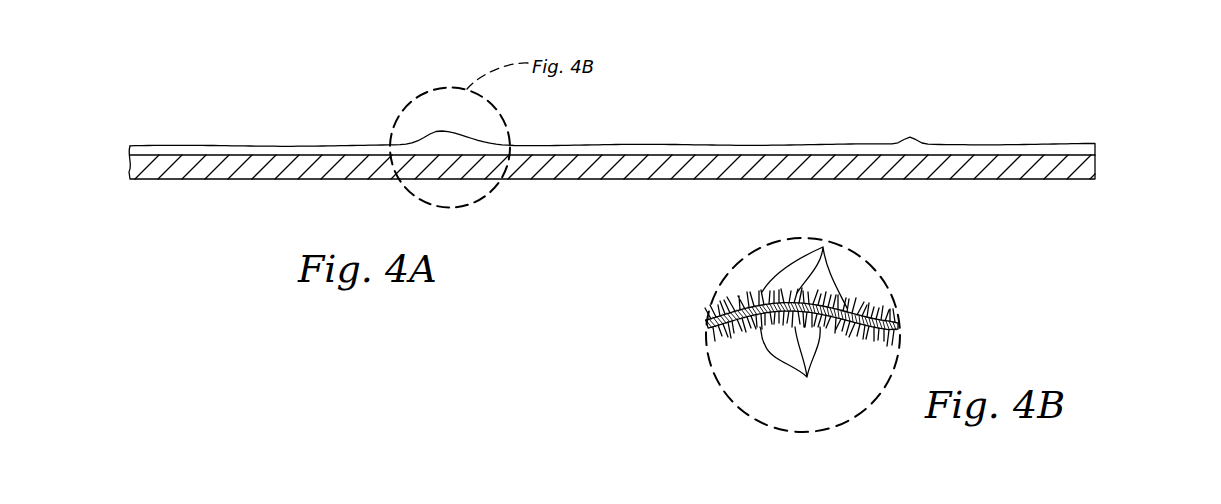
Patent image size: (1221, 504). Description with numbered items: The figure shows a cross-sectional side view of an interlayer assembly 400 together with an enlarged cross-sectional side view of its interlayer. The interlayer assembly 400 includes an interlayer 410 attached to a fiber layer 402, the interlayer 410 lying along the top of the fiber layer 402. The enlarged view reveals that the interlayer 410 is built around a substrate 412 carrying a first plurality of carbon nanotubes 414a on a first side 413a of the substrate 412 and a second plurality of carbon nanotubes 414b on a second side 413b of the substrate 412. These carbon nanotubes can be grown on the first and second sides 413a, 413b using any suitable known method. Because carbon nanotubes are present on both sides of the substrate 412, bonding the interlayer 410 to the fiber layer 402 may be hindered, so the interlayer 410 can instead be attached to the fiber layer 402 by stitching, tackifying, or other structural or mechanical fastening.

In FIG. 4A, the interlayer assembly 400 is at (639, 130).
In FIG. 4A, the fiber layer 402 is at (1068, 178).
In FIG. 4A, the interlayer 410 is at (1043, 144).
In FIG. 4B, the interlayer 410 is at (803, 309).
In FIG. 4B, the substrate 412 is at (898, 326).
In FIG. 4B, the first side 413a is at (732, 337).
In FIG. 4B, the second side 413b is at (721, 307).
In FIG. 4B, the first plurality of carbon nanotubes 414a is at (807, 377).
In FIG. 4B, the second plurality of carbon nanotubes 414b is at (823, 247).